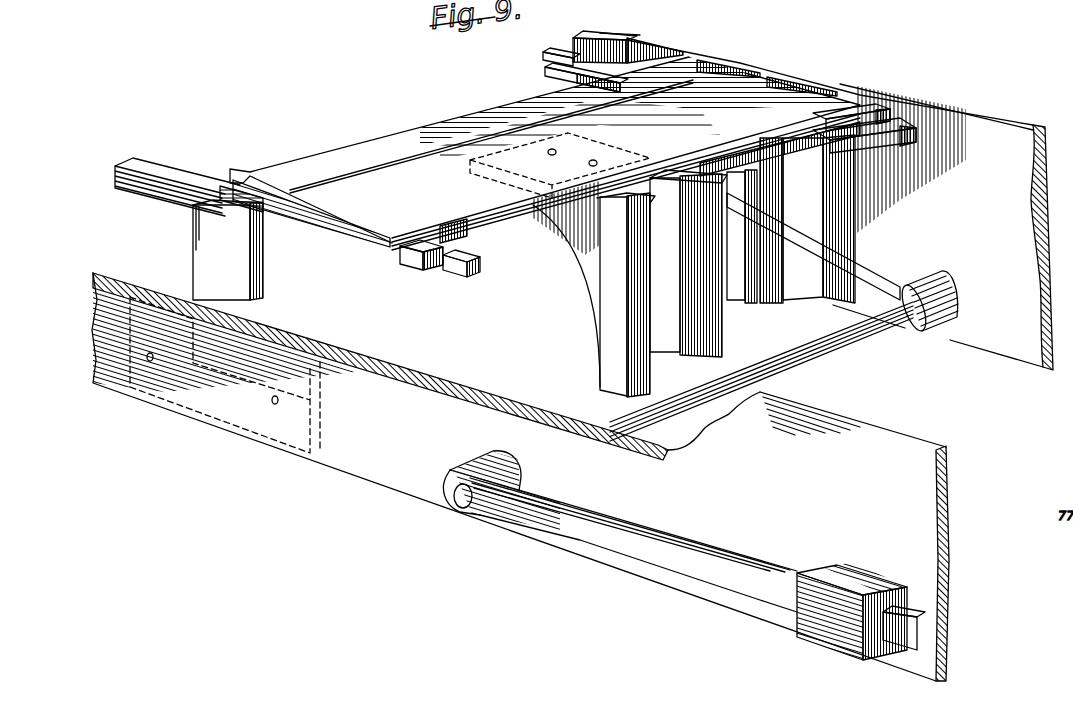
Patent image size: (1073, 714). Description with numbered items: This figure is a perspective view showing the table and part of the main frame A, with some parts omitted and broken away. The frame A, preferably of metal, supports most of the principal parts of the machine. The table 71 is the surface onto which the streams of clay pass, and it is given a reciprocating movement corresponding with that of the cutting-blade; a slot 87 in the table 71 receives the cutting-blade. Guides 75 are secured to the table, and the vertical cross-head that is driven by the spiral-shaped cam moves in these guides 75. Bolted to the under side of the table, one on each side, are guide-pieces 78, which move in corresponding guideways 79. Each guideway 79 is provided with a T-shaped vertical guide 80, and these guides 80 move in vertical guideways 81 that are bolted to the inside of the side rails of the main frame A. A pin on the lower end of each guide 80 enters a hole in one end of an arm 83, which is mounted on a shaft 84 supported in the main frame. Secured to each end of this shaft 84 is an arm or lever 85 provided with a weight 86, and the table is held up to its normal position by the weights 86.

The table 71 is at (545, 153).
The guides 75 is at (690, 306).
The guide-pieces 78 is at (568, 76).
The guideways 79 is at (545, 58).
The T-shaped vertical guide 80 is at (230, 252).
The vertical guideways 81 is at (283, 301).
The arm 83 is at (813, 246).
The shaft 84 is at (777, 362).
The arm or lever 85 is at (620, 531).
The weight 86 is at (812, 627).
The slot 87 is at (399, 164).
The frame A is at (360, 418).